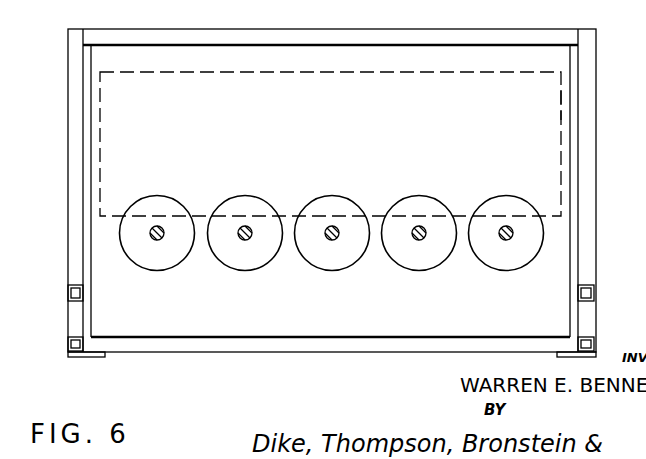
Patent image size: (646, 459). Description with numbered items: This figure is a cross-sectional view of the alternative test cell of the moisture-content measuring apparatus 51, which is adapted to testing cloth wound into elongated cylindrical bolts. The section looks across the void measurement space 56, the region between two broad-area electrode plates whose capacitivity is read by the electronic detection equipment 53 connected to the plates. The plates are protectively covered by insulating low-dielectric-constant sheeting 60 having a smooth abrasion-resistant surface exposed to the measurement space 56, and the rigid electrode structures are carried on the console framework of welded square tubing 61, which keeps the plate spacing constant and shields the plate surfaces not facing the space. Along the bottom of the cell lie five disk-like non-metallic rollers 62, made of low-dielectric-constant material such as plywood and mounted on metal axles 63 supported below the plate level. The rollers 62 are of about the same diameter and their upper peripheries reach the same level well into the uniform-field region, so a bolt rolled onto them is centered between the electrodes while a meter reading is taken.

The apparatus 51 is at (607, 198).
The electronic detection equipment 53 is at (545, 107).
The void measurement space 56 is at (322, 105).
The insulating low-dielectric-constant sheeting 60 is at (110, 58).
The console framework of welded square tubing 61 is at (73, 263).
The disk-like non-metallic rollers 62 is at (251, 262).
The metal axles 63 is at (157, 242).